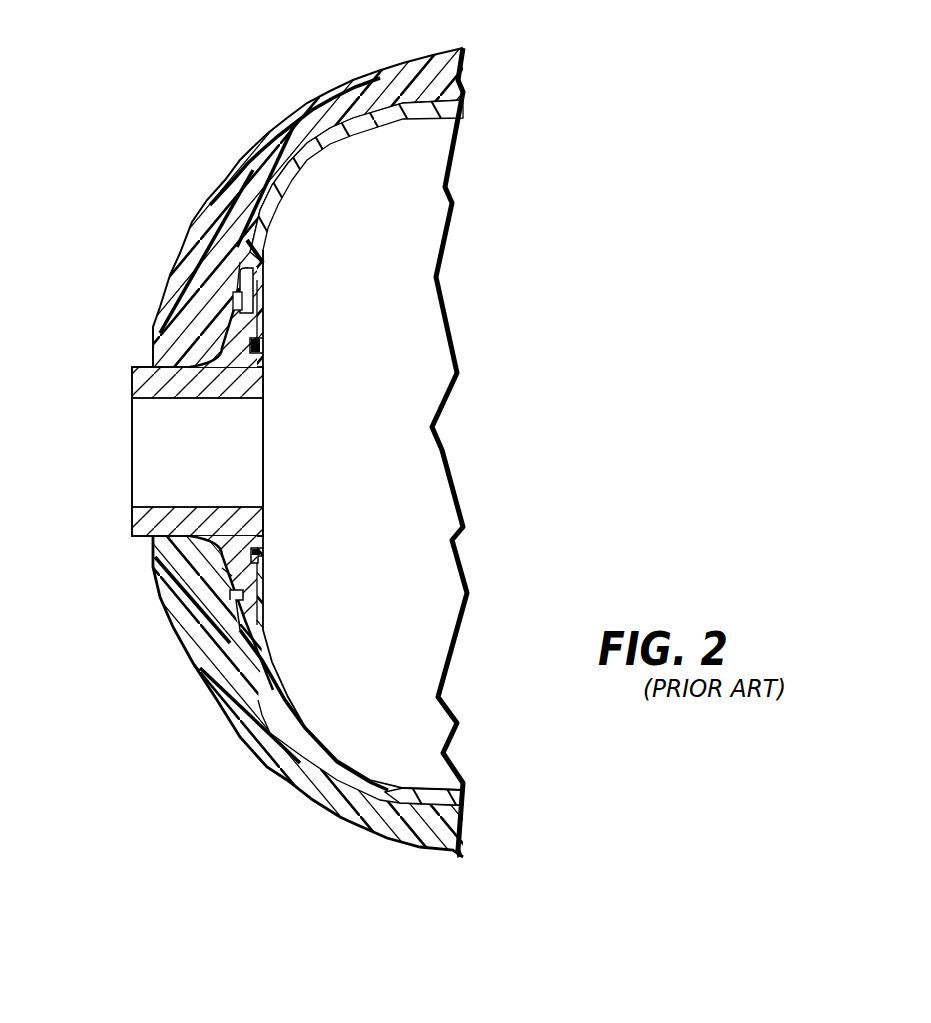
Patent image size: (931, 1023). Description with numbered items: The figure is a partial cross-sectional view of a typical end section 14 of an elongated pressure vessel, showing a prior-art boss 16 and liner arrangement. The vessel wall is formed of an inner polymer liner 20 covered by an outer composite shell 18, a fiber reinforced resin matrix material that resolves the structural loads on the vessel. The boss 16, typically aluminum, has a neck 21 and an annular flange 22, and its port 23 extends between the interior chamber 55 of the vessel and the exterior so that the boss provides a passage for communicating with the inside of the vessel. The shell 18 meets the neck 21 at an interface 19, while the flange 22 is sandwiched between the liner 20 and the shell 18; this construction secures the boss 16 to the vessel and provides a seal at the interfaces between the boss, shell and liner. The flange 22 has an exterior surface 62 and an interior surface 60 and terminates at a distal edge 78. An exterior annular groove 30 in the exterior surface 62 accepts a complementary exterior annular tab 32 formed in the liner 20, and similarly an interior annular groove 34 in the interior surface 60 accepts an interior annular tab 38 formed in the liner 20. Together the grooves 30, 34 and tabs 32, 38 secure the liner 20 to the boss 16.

The end section 14 is at (145, 118).
The boss 16 is at (112, 380).
The outer composite shell 18 is at (433, 80).
The interface 19 is at (150, 510).
The inner polymer liner 20 is at (430, 110).
The neck 21 is at (160, 392).
The annular flange 22 is at (243, 283).
The port 23 is at (235, 459).
The exterior annular groove 30 is at (233, 282).
The exterior annular tab 32 is at (236, 300).
The interior annular groove 34 is at (263, 347).
The interior annular tab 38 is at (260, 347).
The interior chamber 55 is at (392, 405).
The interior surface 60 is at (263, 340).
The exterior surface 62 is at (220, 597).
The distal edge 78 is at (247, 268).